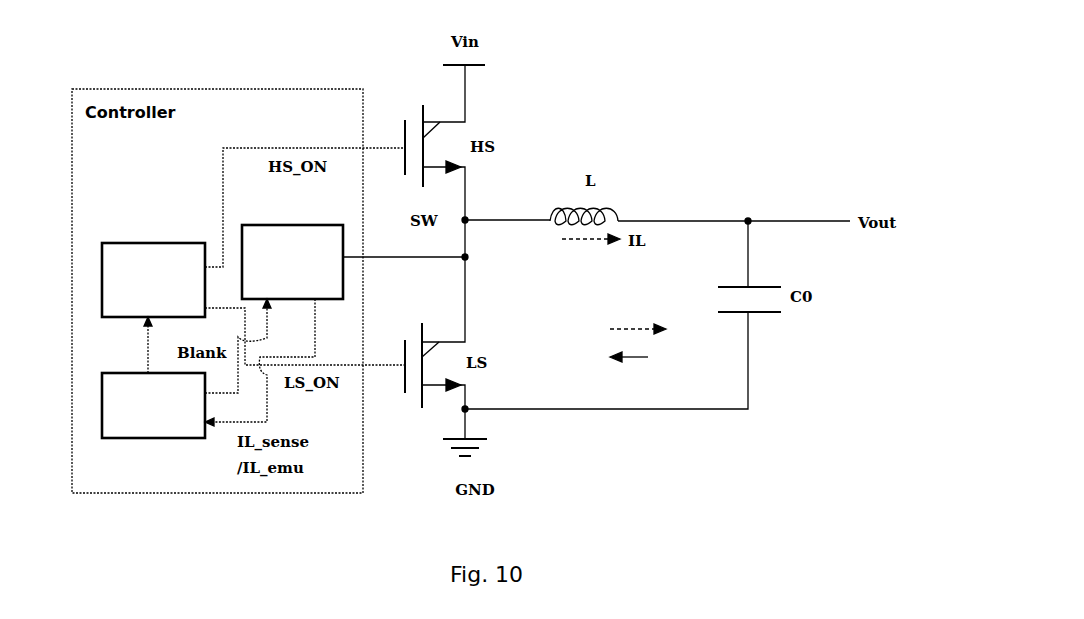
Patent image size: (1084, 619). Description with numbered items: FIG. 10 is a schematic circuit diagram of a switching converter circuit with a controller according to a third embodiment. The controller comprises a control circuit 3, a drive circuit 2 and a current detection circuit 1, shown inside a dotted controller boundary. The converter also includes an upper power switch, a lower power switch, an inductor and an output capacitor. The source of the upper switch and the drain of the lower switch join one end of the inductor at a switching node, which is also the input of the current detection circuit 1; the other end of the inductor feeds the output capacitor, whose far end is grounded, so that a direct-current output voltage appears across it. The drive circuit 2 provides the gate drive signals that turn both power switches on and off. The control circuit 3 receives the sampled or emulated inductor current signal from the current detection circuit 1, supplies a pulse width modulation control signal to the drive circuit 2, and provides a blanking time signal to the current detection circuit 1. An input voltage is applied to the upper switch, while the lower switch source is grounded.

The current detection circuit 1 is at (272, 226).
The drive circuit 2 is at (145, 255).
The control circuit 3 is at (147, 432).